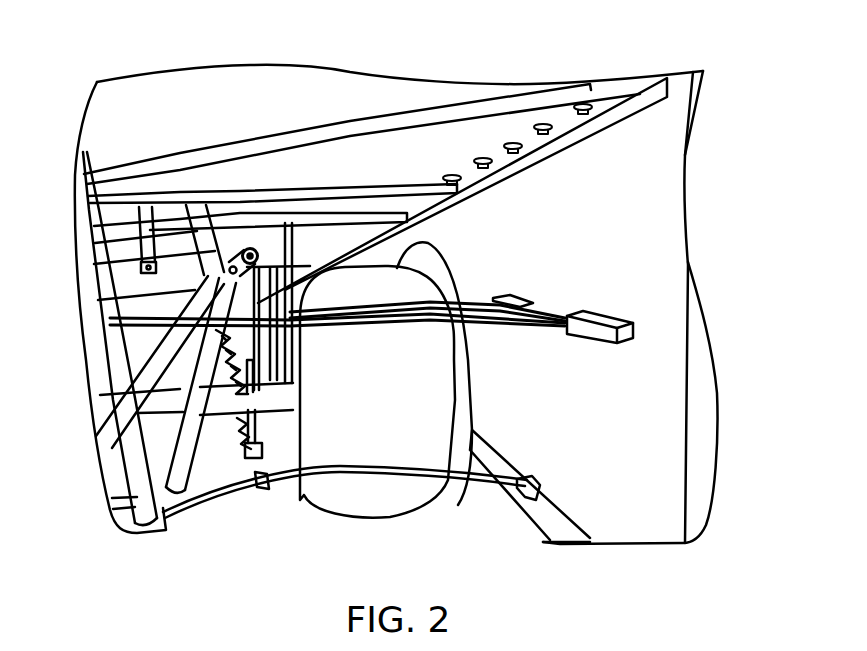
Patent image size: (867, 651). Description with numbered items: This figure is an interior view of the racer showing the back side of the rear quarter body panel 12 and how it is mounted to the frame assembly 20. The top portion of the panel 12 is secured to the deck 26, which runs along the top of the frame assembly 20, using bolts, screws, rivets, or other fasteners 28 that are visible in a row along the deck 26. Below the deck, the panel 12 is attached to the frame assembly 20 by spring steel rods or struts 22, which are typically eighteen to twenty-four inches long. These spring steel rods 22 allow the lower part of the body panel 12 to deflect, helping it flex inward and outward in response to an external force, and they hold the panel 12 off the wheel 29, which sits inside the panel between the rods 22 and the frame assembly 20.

The rear quarter body panel 12 is at (667, 157).
The frame assembly 20 is at (123, 387).
The spring steel rods 22 is at (540, 312).
The deck 26 is at (225, 100).
The fasteners 28 is at (510, 146).
The wheel 29 is at (346, 505).